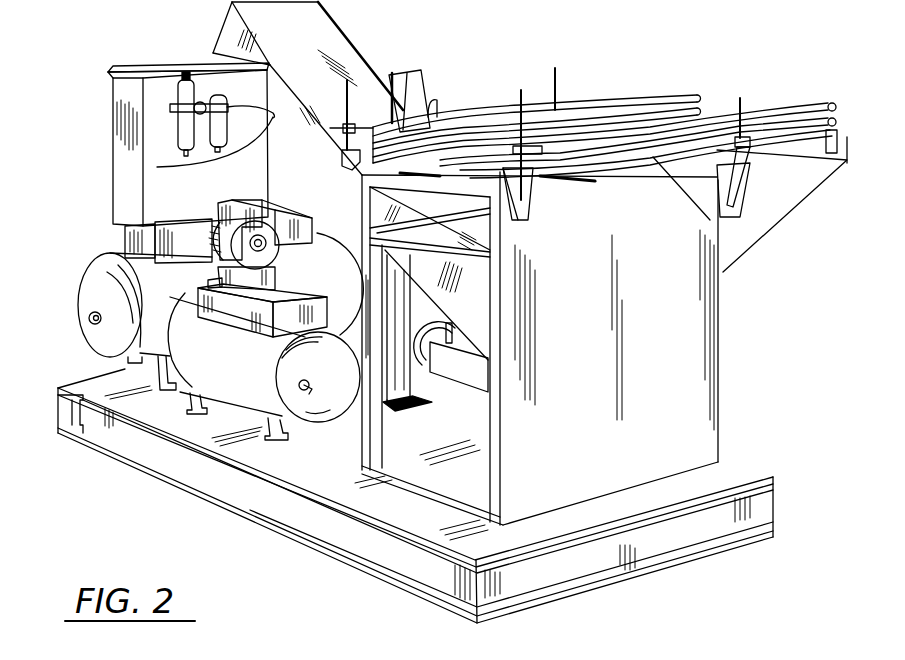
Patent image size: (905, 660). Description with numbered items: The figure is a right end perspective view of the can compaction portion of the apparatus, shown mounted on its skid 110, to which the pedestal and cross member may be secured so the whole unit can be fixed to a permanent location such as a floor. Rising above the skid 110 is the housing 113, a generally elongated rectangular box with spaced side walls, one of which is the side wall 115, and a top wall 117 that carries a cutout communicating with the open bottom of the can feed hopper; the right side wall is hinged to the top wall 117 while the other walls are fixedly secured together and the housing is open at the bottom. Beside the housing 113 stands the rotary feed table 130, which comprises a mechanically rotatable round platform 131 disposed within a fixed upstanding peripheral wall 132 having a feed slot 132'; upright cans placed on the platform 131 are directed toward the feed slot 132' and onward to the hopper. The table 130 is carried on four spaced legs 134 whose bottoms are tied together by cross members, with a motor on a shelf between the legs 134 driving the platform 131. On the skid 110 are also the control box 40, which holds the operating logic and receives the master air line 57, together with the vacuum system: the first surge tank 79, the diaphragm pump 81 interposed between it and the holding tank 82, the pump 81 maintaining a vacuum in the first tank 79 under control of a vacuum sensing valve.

The control box 40 is at (103, 106).
The air line 57 is at (157, 167).
The first tank 79 is at (97, 294).
The diaphragm pump 81 is at (222, 240).
The holding tank 82 is at (253, 381).
The skid 110 is at (672, 580).
The housing 113 is at (368, 32).
The side wall 115 is at (237, 37).
The top wall 117 is at (320, 44).
The rotary feed table 130 is at (670, 88).
The round platform 131 is at (653, 168).
The peripheral wall 132 is at (598, 147).
The feed slot 132' is at (453, 87).
The legs 134 is at (497, 468).